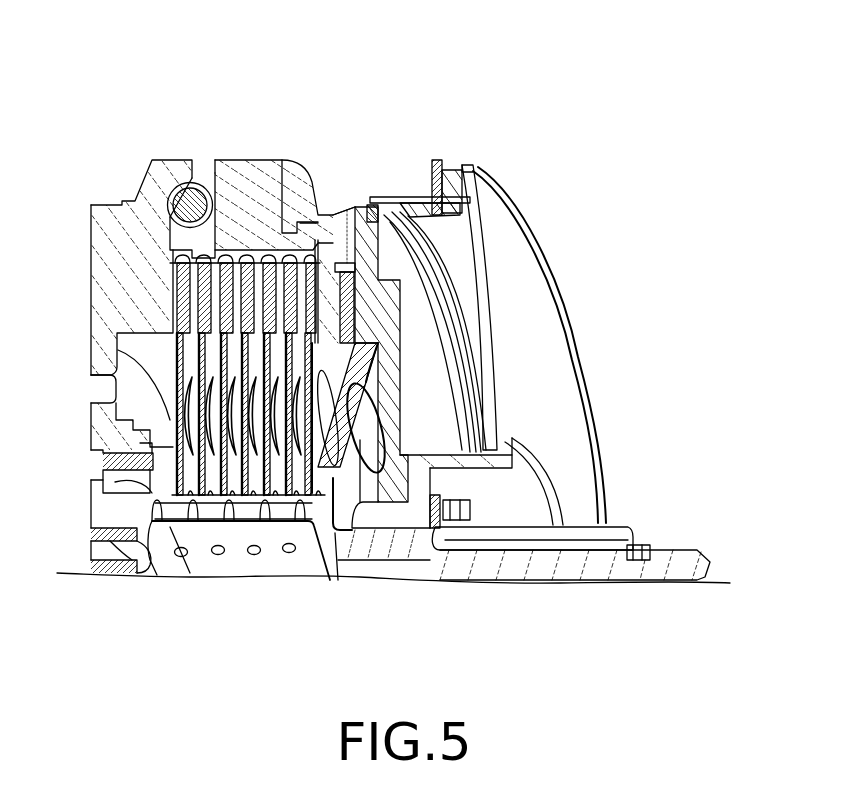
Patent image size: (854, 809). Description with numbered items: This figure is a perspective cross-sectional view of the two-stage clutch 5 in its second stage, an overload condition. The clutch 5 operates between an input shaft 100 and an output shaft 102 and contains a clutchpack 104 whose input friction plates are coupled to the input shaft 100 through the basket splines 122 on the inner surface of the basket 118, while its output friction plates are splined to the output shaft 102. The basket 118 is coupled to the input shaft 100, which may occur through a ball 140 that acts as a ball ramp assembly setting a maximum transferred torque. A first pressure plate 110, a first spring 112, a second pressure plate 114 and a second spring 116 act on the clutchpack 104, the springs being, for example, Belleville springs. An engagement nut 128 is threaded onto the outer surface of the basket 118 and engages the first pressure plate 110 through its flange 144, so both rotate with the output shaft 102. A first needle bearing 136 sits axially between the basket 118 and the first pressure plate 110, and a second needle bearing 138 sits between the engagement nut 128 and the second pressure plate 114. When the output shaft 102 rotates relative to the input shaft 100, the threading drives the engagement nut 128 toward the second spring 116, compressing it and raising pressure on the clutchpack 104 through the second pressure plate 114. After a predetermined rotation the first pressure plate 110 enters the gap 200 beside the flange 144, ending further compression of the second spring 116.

The clutch 5 is at (326, 88).
The input shaft 100 is at (103, 205).
The output shaft 102 is at (630, 570).
The clutchpack 104 is at (183, 387).
The first pressure plate 110 is at (370, 196).
The first spring 112 is at (446, 394).
The second pressure plate 114 is at (461, 162).
The second spring 116 is at (543, 367).
The basket 118 is at (256, 168).
The basket splines 122 is at (230, 252).
The engagement nut 128 is at (413, 168).
The first needle bearing 136 is at (347, 265).
The second needle bearing 138 is at (434, 160).
The ball 140 is at (181, 172).
The flange 144 is at (440, 205).
The gap 200 is at (376, 195).